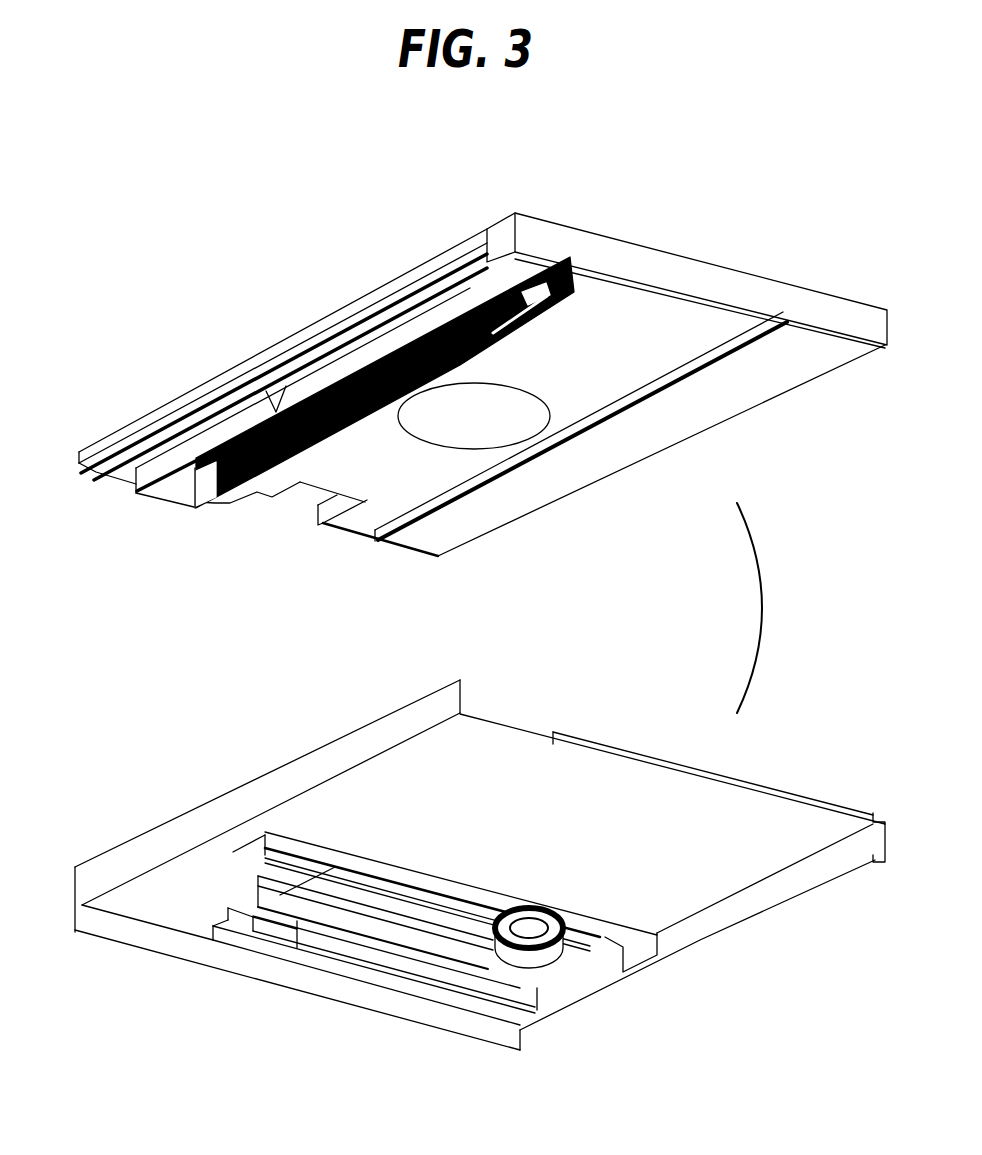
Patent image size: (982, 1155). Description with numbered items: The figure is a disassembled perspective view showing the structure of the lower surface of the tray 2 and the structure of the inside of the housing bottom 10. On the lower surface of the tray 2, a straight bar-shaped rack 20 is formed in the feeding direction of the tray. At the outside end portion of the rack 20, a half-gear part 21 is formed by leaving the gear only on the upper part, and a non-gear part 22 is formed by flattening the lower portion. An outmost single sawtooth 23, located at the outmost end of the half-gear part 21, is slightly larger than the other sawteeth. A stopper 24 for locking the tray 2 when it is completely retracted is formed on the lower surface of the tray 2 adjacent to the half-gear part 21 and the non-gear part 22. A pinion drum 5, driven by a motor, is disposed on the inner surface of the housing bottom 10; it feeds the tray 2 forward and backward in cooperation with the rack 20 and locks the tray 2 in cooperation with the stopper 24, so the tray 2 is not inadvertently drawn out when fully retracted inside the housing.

The tray 2 is at (716, 252).
The pinion drum 5 is at (573, 947).
The housing bottom 10 is at (798, 782).
The rack 20 is at (203, 510).
The half-gear part 21 is at (562, 293).
The non-gear part 22 is at (553, 300).
The outmost single sawtooth 23 is at (570, 284).
The stopper 24 is at (537, 307).